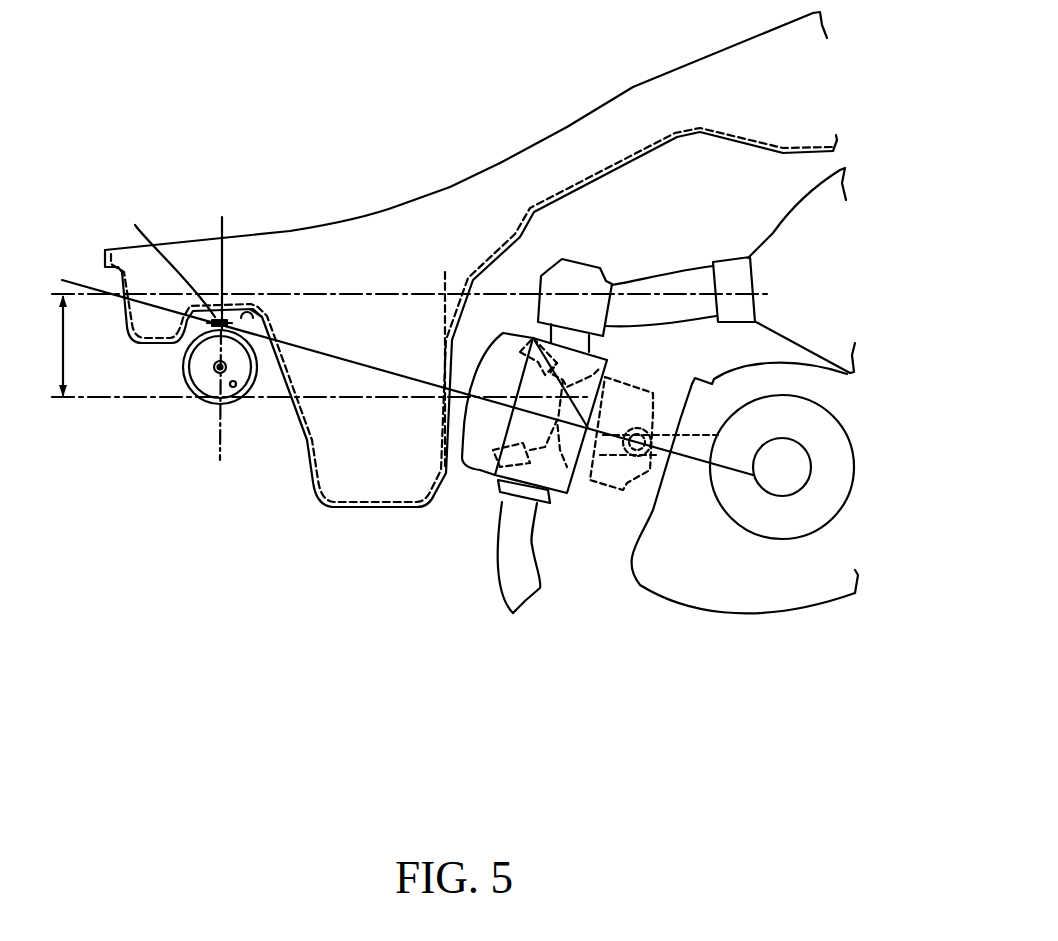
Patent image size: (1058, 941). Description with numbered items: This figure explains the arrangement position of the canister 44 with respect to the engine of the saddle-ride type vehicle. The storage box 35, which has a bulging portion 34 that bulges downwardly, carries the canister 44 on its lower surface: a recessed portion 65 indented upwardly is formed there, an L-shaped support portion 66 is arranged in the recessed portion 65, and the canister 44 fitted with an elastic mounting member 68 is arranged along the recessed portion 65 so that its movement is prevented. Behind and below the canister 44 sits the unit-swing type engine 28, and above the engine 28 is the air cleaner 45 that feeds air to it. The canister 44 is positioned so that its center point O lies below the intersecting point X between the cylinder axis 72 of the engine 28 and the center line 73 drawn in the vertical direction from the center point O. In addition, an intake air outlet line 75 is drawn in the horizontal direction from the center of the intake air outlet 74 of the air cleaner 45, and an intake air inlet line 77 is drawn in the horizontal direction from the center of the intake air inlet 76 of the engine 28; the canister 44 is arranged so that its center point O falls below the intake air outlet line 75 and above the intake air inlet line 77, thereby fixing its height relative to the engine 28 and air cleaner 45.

The unit-swing type engine 28 is at (650, 590).
The bulging portion 34 is at (313, 488).
The storage box 35 is at (358, 212).
The canister 44 is at (175, 400).
The air cleaner 45 is at (770, 227).
The recessed portion 65 is at (260, 305).
The support portion 66 is at (205, 333).
The elastic mounting member 68 is at (255, 340).
The cylinder axis 72 is at (393, 373).
The center line 73 is at (222, 217).
The intake air outlet 74 is at (713, 281).
The intake air outlet line 75 is at (519, 295).
The intake air inlet 76 is at (581, 365).
The intake air inlet line 77 is at (418, 380).
The intersecting point X is at (163, 254).
The center point O is at (220, 368).